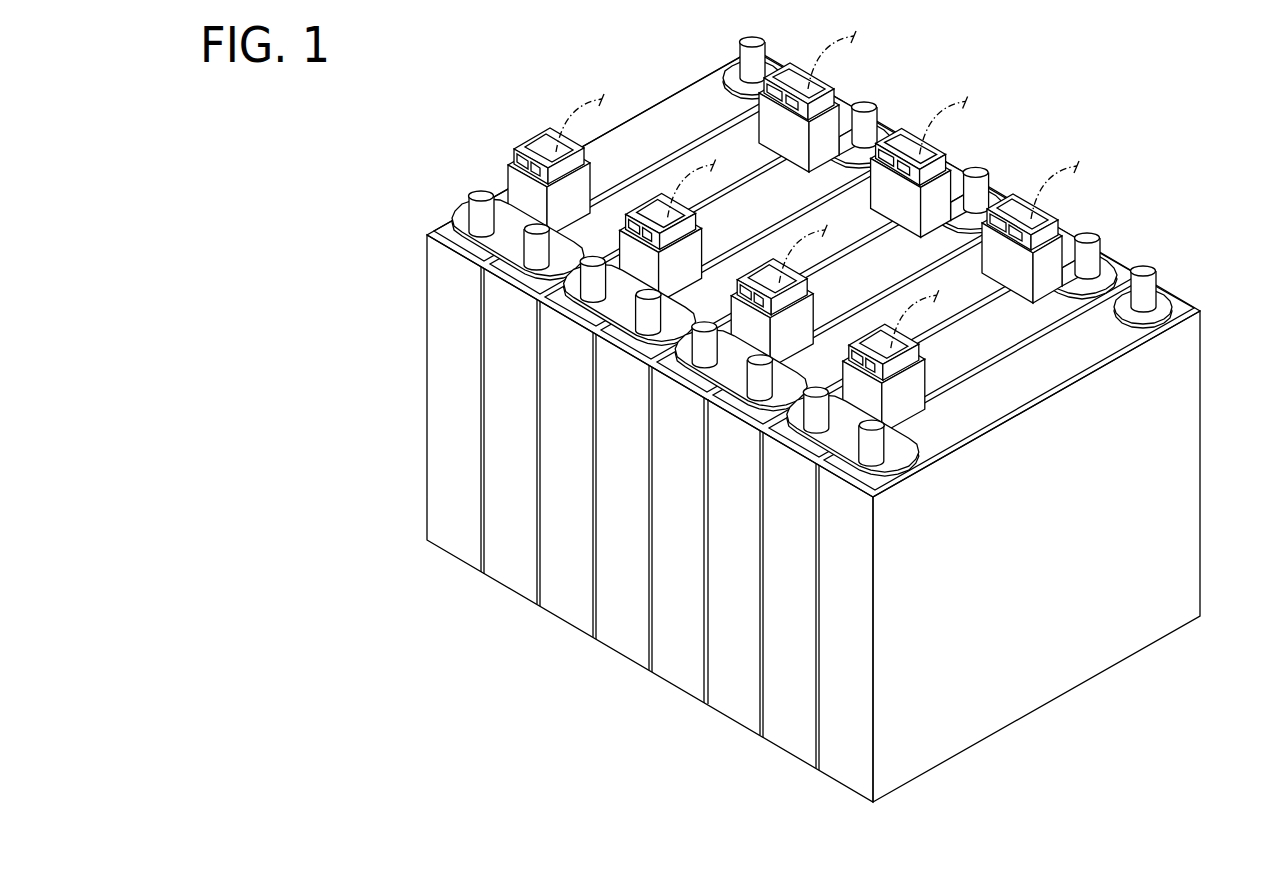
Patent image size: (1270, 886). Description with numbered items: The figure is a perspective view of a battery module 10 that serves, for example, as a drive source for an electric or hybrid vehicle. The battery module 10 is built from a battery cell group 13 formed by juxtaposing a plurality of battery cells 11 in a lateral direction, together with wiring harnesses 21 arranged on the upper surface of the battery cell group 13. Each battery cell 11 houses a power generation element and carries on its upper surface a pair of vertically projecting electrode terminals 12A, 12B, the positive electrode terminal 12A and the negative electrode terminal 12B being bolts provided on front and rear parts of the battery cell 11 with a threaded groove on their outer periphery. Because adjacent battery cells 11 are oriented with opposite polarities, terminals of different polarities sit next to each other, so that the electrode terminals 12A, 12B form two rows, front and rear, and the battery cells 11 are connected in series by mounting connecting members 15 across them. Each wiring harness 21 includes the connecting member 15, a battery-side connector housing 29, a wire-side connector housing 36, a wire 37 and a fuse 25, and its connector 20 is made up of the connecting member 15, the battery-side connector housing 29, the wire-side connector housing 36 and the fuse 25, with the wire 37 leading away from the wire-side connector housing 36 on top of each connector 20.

The battery module 10 is at (809, 418).
The battery cell 11 is at (814, 803).
The positive electrode terminal 12A is at (752, 45).
The negative electrode terminal 12B is at (480, 194).
The battery cell group 13 is at (799, 428).
The connecting member 15 is at (497, 244).
The connector 20 is at (1062, 240).
The wiring harness 21 is at (1022, 203).
The fuse 25 is at (537, 167).
The battery-side connector housing 29 is at (512, 207).
The wire-side connector housing 36 is at (552, 140).
The wire 37 is at (592, 103).